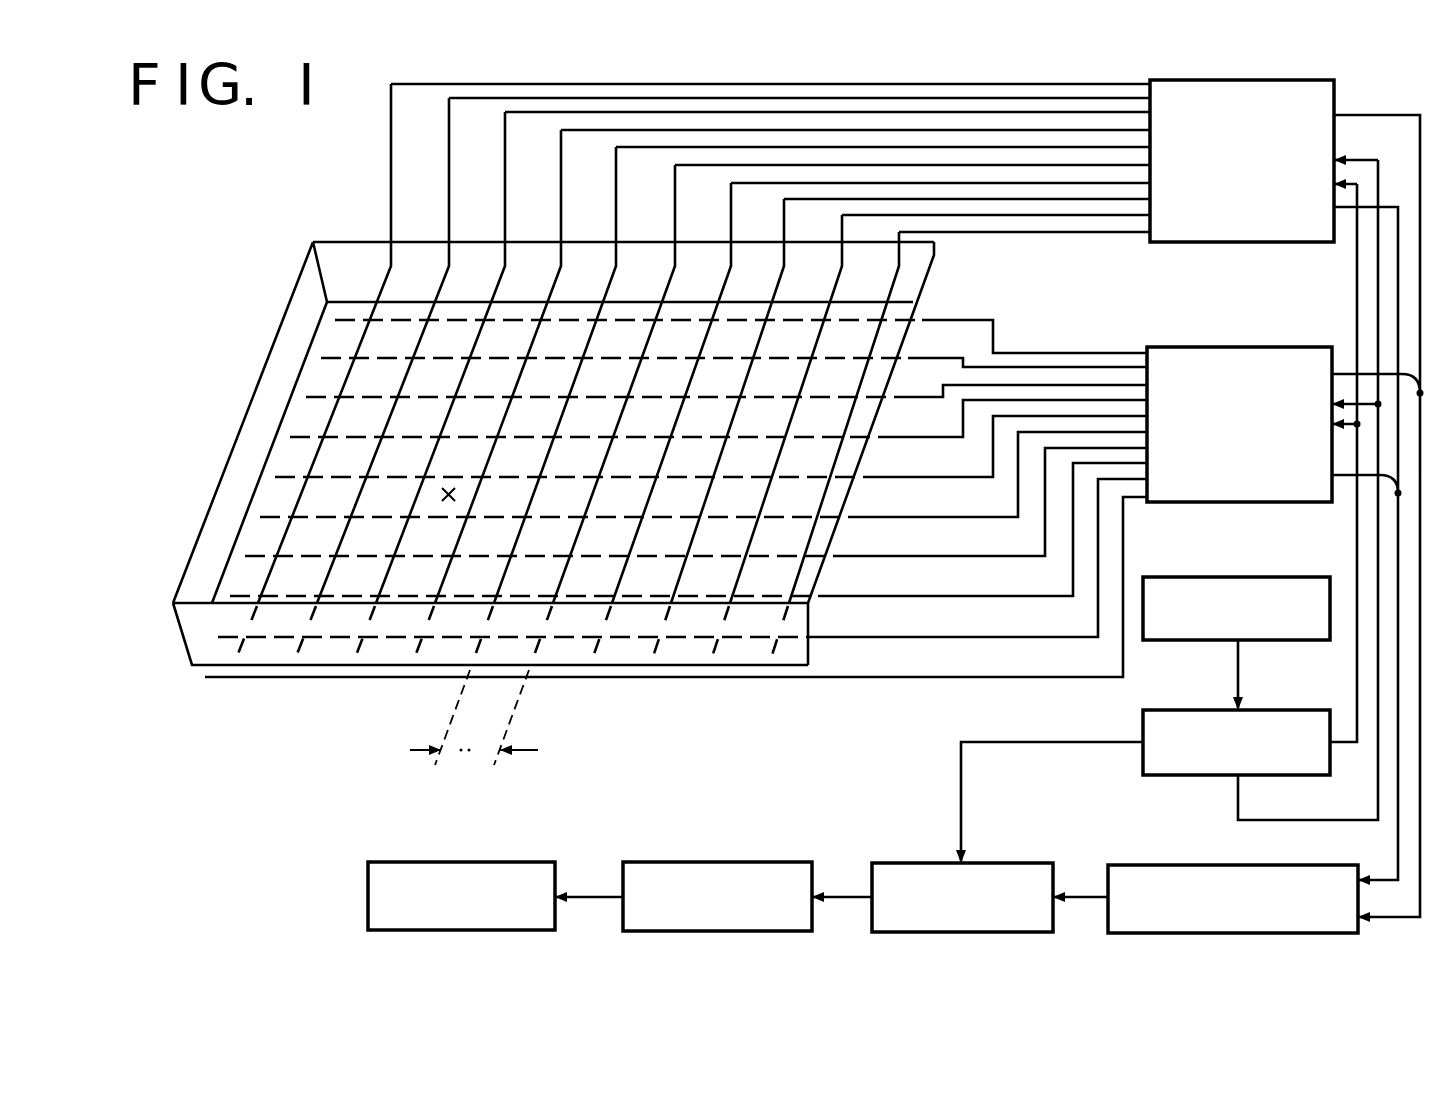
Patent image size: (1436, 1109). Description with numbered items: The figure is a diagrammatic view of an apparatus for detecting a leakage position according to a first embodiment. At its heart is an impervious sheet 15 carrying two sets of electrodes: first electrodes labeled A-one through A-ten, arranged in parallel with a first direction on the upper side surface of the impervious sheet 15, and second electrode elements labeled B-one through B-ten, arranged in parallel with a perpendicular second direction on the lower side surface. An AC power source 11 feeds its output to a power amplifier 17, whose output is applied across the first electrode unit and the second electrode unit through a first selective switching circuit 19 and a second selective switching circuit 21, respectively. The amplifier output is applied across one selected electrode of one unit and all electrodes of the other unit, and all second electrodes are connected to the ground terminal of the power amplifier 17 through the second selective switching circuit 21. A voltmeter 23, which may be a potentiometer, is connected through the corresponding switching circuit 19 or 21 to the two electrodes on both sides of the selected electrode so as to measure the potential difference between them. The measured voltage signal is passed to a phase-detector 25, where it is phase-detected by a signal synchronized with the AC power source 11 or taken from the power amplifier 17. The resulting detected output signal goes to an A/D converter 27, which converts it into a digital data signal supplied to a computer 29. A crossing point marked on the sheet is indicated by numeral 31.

The AC power source 11 is at (1208, 577).
The impervious sheet 15 is at (300, 575).
The power amplifier 17 is at (1258, 708).
The first selective switching circuit 19 is at (1335, 93).
The second selective switching circuit 21 is at (1230, 347).
The voltmeter 23 is at (1172, 865).
The phase-detector 25 is at (1008, 863).
The A/D converter 27 is at (740, 862).
The computer 29 is at (515, 862).
The electrode crossing point 31 is at (447, 505).